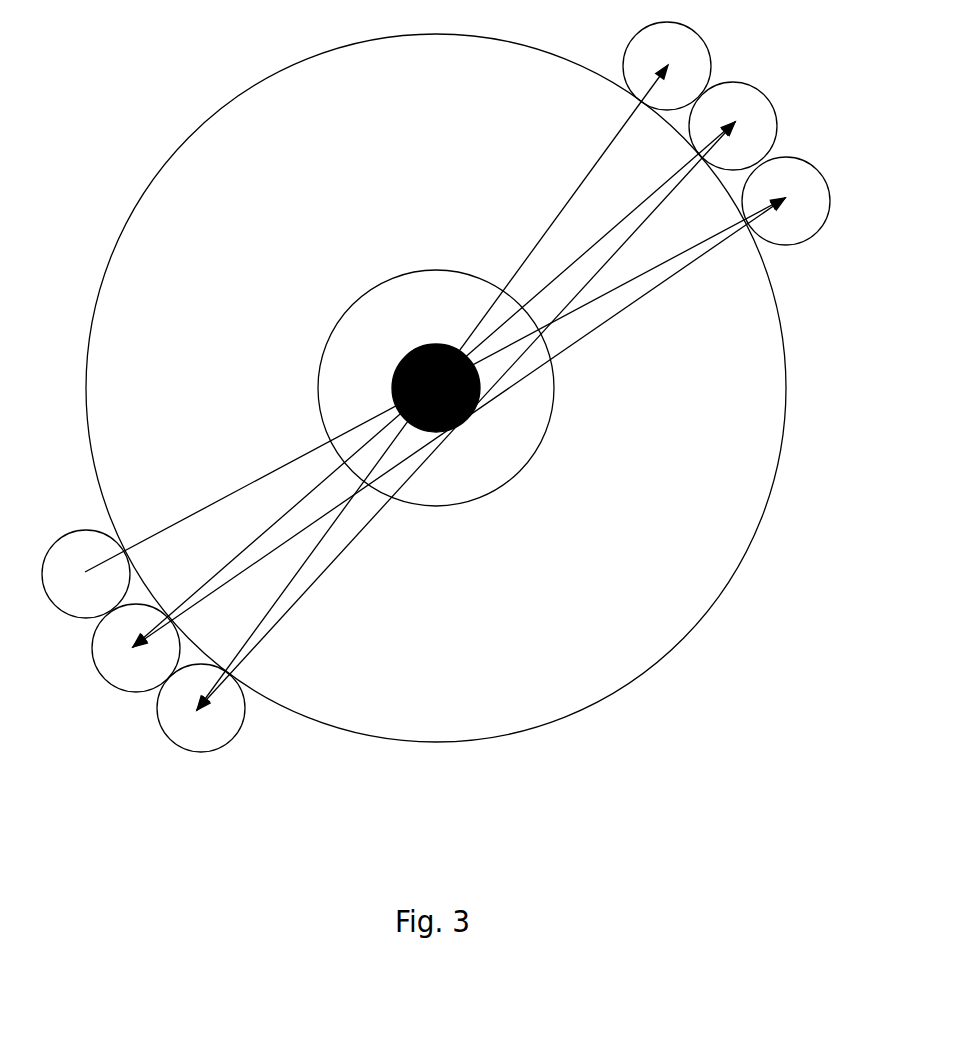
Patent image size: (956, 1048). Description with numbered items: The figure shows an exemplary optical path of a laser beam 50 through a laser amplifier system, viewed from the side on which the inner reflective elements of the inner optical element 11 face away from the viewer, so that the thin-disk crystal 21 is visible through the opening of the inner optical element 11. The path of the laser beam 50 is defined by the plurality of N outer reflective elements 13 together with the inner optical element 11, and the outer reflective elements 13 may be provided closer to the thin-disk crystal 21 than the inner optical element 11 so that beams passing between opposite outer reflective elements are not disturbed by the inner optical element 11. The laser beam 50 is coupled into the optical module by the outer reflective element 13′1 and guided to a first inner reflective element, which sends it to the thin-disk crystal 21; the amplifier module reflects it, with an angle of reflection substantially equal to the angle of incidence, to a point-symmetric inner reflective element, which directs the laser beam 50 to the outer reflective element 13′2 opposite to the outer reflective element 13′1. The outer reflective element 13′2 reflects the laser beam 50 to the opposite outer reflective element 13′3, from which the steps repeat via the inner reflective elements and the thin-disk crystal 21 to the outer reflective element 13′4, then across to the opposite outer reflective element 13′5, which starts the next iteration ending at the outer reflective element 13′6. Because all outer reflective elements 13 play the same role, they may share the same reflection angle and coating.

The inner optical element 11 is at (453, 388).
The thin-disk crystal 21 is at (436, 375).
The laser beam 50 is at (232, 483).
The outer reflective elements 13 is at (53, 620).
The outer reflective element 13′1 is at (86, 574).
The outer reflective element 13′2 is at (786, 201).
The outer reflective element 13′3 is at (136, 648).
The outer reflective element 13′4 is at (733, 126).
The outer reflective element 13′5 is at (201, 708).
The outer reflective element 13′6 is at (667, 66).